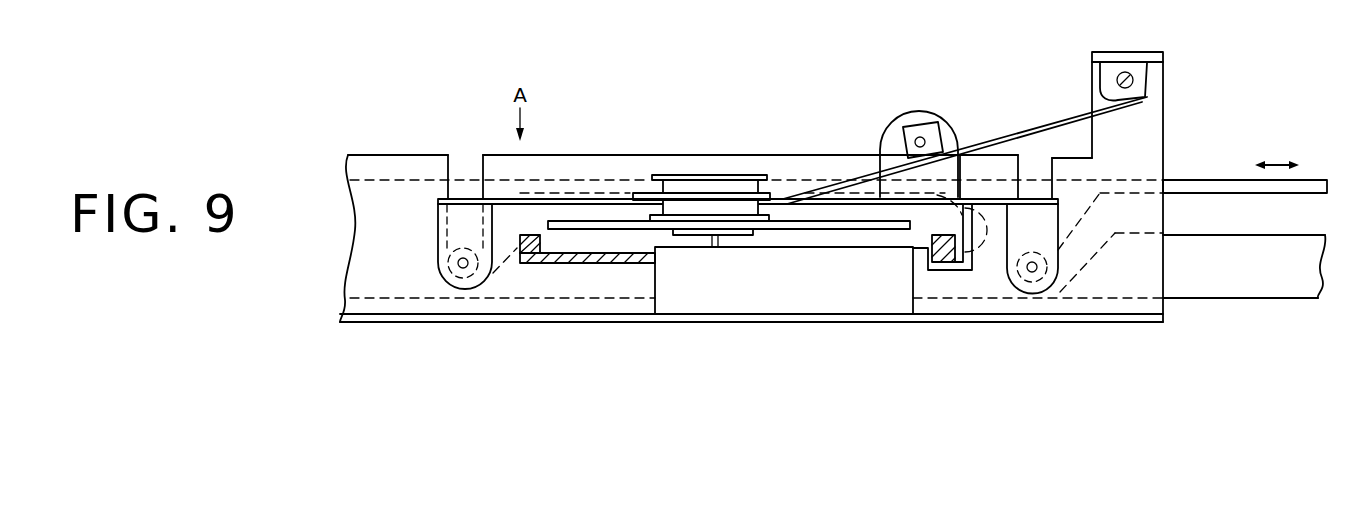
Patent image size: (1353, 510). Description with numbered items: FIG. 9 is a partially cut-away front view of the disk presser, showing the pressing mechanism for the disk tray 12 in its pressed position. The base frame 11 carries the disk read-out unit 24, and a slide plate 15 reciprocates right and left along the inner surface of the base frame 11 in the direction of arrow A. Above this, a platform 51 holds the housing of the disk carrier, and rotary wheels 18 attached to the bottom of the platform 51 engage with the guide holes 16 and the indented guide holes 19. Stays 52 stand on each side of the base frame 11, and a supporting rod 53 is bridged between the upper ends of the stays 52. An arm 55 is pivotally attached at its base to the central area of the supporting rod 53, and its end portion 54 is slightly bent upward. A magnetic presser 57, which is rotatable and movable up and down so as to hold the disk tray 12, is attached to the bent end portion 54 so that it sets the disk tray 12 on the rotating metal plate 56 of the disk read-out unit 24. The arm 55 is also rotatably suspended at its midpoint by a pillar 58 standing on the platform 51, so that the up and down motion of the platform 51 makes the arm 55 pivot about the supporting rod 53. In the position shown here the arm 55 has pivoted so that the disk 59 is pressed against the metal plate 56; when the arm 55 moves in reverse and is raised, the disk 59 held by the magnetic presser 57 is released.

The base frame 11 is at (368, 233).
The disk tray 12 is at (578, 264).
The slide plate 15 is at (1260, 280).
The guide hole 16 is at (1218, 207).
The rotary wheel 18 is at (447, 284).
The indented guide hole 19 is at (455, 168).
The disk read-out unit 24 is at (795, 303).
The platform 51 is at (556, 199).
The stay 52 is at (1150, 134).
The supporting rod 53 is at (1135, 80).
The end portion 54 is at (762, 178).
The arm 55 is at (970, 131).
The rotating metal plate 56 is at (700, 236).
The magnetic presser 57 is at (710, 185).
The pillar 58 is at (912, 108).
The disk 59 is at (615, 220).